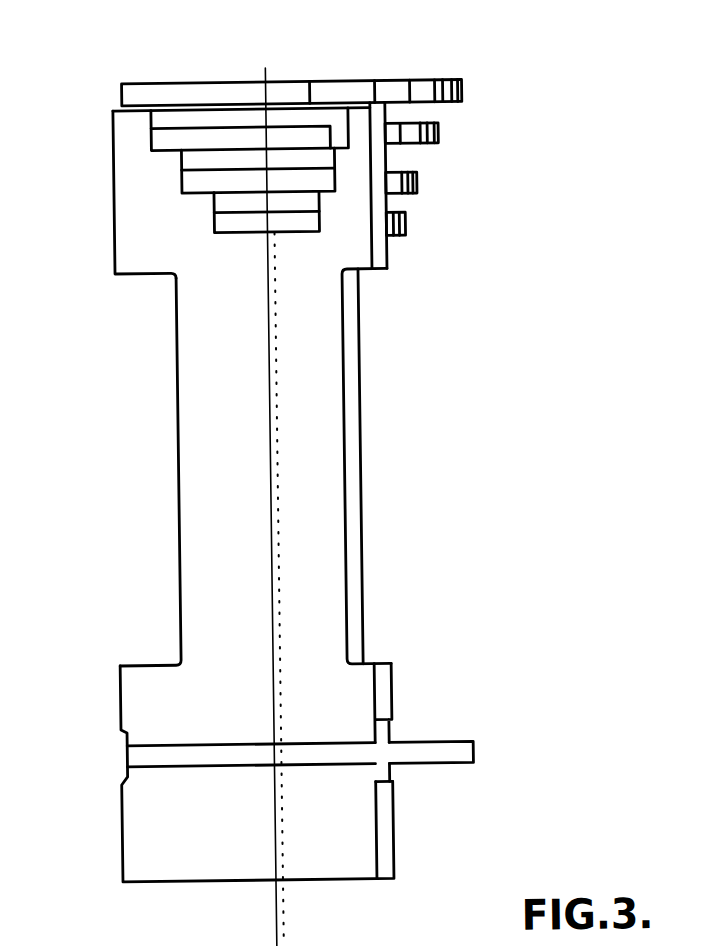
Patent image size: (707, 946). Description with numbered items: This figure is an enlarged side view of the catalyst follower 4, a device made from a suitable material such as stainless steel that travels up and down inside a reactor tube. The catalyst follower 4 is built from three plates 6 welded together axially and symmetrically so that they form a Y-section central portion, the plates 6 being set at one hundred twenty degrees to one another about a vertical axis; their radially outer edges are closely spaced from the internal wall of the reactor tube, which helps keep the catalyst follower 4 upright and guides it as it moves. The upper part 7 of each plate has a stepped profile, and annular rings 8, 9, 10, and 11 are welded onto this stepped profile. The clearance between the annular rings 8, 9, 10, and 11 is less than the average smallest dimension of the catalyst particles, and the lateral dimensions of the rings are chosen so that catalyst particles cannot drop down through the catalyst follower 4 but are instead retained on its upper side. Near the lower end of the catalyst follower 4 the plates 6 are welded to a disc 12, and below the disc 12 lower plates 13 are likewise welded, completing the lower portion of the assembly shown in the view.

The catalyst follower 4 is at (310, 479).
The plates 6 is at (390, 254).
The upper part 7 is at (160, 237).
The annular ring 8 is at (440, 82).
The annular ring 9 is at (442, 122).
The annular ring 10 is at (424, 174).
The annular ring 11 is at (409, 214).
The disc 12 is at (449, 752).
The lower plates 13 is at (111, 825).